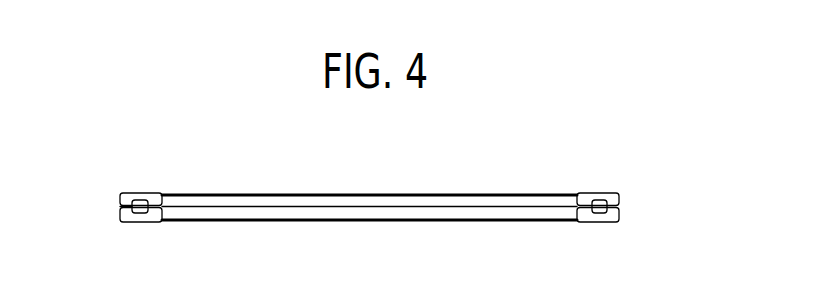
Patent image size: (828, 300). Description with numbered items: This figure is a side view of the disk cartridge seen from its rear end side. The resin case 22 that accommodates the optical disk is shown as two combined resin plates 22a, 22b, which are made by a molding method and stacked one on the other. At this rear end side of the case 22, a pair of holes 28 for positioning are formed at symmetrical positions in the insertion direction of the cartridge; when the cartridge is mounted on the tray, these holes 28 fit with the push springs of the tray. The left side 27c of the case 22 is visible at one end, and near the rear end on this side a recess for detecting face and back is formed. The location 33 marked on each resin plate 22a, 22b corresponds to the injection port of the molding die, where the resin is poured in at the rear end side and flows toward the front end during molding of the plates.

The resin case 22 is at (421, 198).
The resin plate 22a is at (617, 197).
The resin plate 22b is at (618, 215).
The left side 27c is at (122, 203).
The holes for positioning 28 is at (137, 213).
The injection port location 33 is at (323, 202).